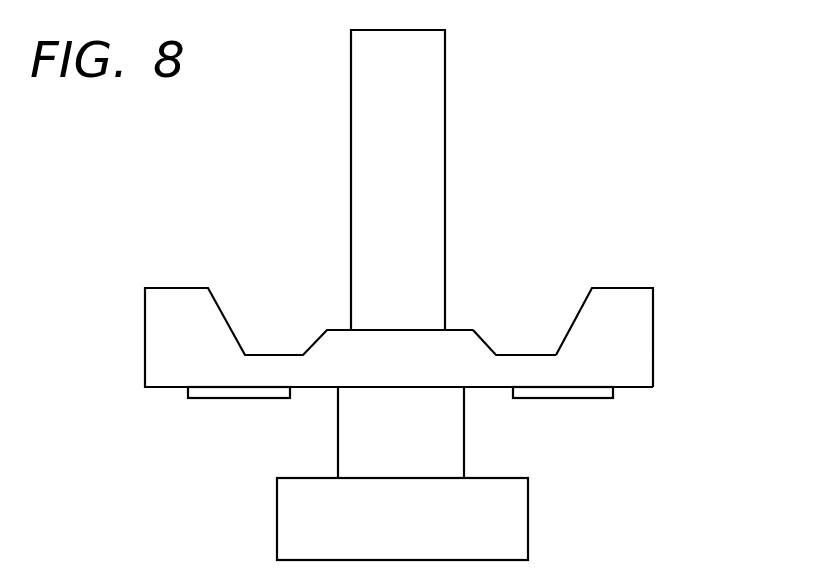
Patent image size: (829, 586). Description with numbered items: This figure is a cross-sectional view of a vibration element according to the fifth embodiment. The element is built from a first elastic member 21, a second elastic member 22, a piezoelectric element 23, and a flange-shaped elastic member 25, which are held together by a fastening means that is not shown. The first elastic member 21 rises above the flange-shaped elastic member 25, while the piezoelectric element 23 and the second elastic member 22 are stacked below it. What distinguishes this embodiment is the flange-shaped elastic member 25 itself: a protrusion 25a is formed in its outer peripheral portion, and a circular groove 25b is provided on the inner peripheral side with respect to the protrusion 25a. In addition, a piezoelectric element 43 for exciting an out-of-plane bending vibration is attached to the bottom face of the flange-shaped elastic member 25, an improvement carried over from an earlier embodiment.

The first elastic member 21 is at (430, 95).
The second elastic member 22 is at (513, 518).
The piezoelectric element 23 is at (448, 440).
The flange-shaped elastic member 25 is at (439, 326).
The protrusion 25a is at (644, 304).
The circular groove 25b is at (526, 345).
The piezoelectric element 43 is at (598, 398).